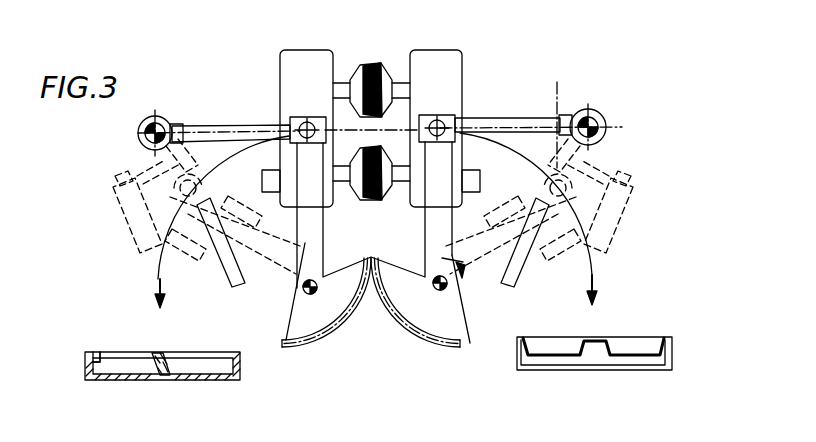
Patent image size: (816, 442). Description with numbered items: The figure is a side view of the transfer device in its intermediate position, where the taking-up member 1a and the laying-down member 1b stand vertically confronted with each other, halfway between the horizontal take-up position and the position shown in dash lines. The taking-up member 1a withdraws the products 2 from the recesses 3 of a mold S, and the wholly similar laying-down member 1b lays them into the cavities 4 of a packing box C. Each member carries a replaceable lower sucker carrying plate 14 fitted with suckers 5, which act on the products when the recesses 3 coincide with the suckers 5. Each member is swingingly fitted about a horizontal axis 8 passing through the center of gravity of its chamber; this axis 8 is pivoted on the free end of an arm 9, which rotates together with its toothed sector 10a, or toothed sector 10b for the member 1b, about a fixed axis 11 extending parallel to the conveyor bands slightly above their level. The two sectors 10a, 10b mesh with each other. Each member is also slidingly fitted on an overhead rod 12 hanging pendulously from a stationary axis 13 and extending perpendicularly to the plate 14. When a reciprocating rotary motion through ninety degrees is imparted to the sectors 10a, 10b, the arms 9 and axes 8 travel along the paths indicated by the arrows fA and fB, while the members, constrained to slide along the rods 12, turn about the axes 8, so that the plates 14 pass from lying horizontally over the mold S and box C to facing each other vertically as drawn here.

The taking-up member 1a is at (470, 62).
The laying-down member 1b is at (272, 83).
The product 2 is at (368, 62).
The recess 3 is at (657, 338).
The cavity 4 is at (103, 360).
The sucker 5 is at (385, 98).
The horizontal axis 8 is at (556, 115).
The arm 9 is at (298, 256).
The toothed sector 10a is at (412, 323).
The toothed sector 10b is at (332, 328).
The fixed axis 11 is at (314, 292).
The overhead rod 12 is at (200, 127).
The stationary axis 13 is at (590, 112).
The sucker carrying plate 14 is at (636, 277).
The packing box C is at (76, 380).
The mold S is at (682, 352).
The path arrow fA is at (548, 219).
The path arrow fB is at (155, 278).